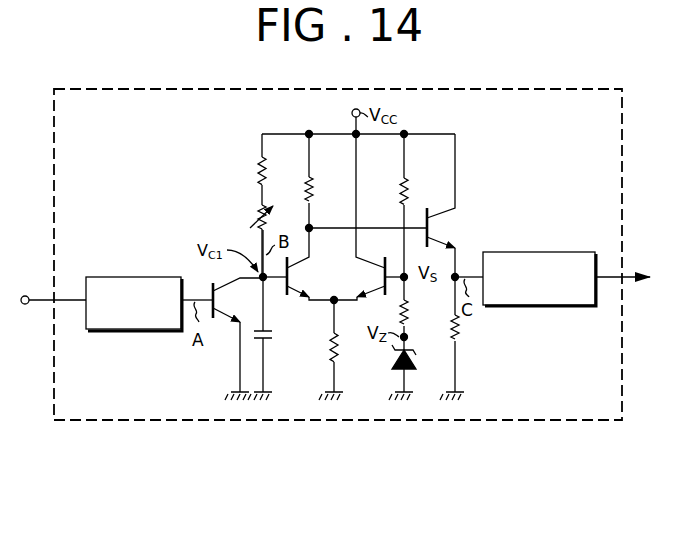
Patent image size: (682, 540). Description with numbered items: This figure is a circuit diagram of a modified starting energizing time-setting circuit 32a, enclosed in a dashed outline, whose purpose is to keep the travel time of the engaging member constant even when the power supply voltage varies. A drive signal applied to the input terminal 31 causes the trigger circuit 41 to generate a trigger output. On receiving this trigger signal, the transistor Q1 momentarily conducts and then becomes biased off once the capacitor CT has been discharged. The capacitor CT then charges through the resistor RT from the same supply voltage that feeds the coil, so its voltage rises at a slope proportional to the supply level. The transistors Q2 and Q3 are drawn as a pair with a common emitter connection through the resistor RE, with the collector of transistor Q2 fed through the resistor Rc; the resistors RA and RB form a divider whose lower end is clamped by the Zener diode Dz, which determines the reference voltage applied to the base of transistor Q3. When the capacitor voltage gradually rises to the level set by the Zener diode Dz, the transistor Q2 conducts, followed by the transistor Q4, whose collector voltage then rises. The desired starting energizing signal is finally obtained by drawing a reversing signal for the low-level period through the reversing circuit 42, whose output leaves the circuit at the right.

The input terminal 31 is at (27, 296).
The trigger circuit 41 is at (137, 276).
The starting energizing time-setting circuit 32a is at (521, 89).
The reversing circuit 42 is at (548, 252).
The transistor Q1 is at (225, 305).
The transistor Q2 is at (296, 285).
The transistor Q3 is at (378, 266).
The transistor Q4 is at (445, 217).
The resistor RT is at (248, 160).
The resistor Rc is at (322, 181).
The resistor RA is at (410, 186).
The resistor RB is at (419, 307).
The resistor RE is at (347, 346).
The capacitor CT is at (271, 334).
The Zener diode Dz is at (416, 359).